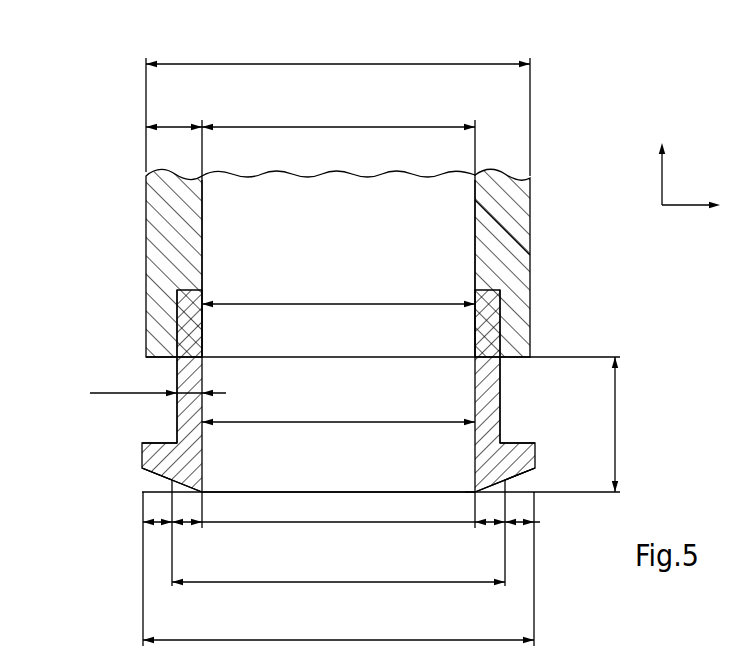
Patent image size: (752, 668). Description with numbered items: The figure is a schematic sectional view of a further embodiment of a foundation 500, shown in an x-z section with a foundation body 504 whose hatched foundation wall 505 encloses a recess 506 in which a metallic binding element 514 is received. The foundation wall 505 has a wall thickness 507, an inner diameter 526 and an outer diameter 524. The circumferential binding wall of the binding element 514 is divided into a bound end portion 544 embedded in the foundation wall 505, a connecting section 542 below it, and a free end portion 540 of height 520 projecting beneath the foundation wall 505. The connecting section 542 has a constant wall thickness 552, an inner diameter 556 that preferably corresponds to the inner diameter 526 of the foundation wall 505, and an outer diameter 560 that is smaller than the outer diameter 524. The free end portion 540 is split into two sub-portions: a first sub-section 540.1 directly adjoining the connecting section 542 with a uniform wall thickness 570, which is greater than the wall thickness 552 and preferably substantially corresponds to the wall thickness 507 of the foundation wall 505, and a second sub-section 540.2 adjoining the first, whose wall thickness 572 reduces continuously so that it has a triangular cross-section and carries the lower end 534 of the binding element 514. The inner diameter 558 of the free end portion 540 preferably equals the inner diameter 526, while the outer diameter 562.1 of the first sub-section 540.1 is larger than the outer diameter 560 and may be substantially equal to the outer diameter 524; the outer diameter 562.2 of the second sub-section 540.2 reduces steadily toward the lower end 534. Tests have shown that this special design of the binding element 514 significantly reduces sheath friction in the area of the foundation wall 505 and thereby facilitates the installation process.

The foundation 500 is at (648, 81).
The foundation body 504 is at (531, 178).
The foundation wall 505 is at (510, 237).
The recess of the foundation wall 506 is at (506, 360).
The wall thickness of the foundation wall 507 is at (182, 127).
The binding element 514 is at (488, 392).
The height of the free end portion 520 is at (615, 425).
The outer diameter of the foundation wall 524 is at (340, 64).
The inner diameter of the foundation wall 526 is at (340, 127).
The lower end 534 is at (466, 495).
The free end portion 540 is at (234, 422).
The first sub-section 540.1 is at (142, 445).
The second sub-section 540.2 is at (142, 492).
The connecting section 542 is at (234, 357).
The bound end portion 544 is at (234, 292).
The wall thickness of the connecting section 552 is at (158, 378).
The inner diameter of the connecting section 556 is at (333, 304).
The inner diameter of the free end section 558 is at (333, 492).
The outer diameter of the connecting section 560 is at (333, 422).
The outer diameter of the first sub-section 562.1 is at (340, 640).
The outer diameter of the second sub-section 562.2 is at (340, 582).
The wall thickness of the free end portion 570 is at (168, 525).
The reducing wall thickness 572 is at (492, 526).